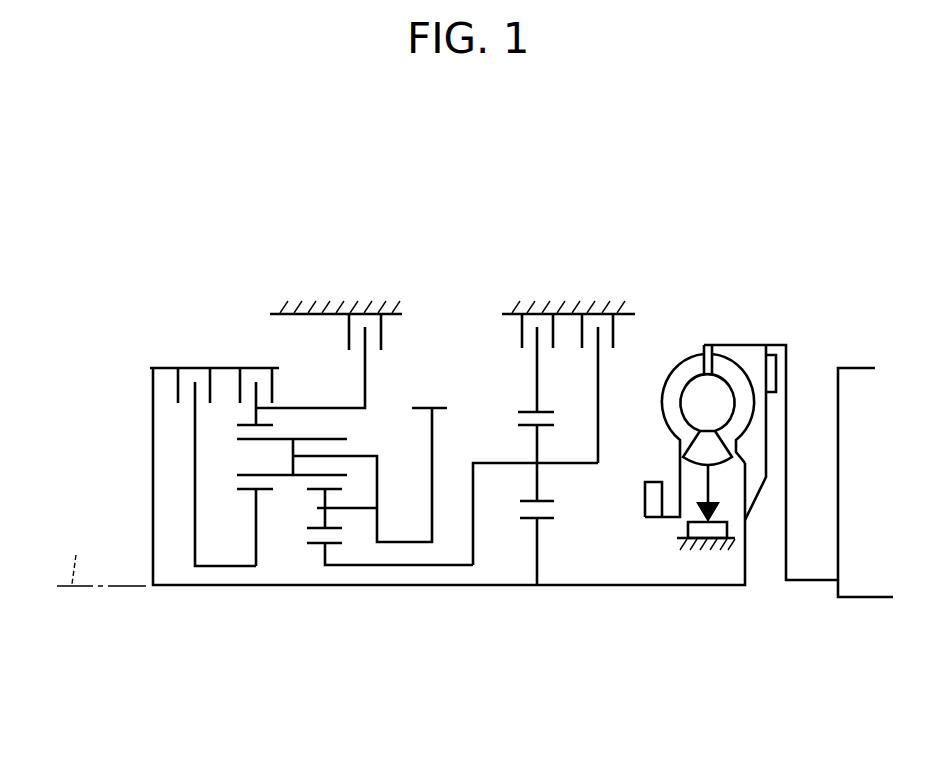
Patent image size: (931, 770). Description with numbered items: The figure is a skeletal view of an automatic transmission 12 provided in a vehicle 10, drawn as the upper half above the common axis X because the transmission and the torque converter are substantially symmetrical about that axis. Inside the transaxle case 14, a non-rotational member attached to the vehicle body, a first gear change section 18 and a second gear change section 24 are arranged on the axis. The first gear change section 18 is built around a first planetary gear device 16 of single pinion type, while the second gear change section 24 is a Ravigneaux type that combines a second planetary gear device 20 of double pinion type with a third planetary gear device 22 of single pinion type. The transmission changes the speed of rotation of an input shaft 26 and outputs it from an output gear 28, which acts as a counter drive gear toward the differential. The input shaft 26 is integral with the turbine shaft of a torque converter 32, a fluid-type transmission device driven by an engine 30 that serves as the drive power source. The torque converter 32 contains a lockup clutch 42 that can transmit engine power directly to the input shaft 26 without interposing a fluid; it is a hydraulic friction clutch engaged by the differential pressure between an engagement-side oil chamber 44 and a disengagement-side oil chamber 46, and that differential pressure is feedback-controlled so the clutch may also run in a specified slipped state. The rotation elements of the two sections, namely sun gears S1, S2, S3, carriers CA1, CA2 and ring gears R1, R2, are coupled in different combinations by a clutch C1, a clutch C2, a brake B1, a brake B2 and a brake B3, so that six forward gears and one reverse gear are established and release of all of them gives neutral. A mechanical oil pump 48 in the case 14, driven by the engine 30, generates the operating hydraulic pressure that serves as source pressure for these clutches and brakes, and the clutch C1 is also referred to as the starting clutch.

The vehicle 10 is at (786, 184).
The automatic transmission 12 is at (584, 238).
The transaxle case 14 is at (333, 313).
The first planetary gear device 16 is at (539, 607).
The first gear change section 18 is at (562, 687).
The second planetary gear device 20 is at (329, 607).
The third planetary gear device 22 is at (258, 607).
The second gear change section 24 is at (225, 689).
The input shaft 26 is at (727, 588).
The output gear 28 is at (440, 408).
The engine 30 is at (866, 585).
The torque converter 32 is at (735, 307).
The lockup clutch 42 is at (775, 380).
The engagement-side oil chamber 44 is at (747, 362).
The disengagement-side oil chamber 46 is at (773, 445).
The mechanical oil pump 48 is at (653, 482).
The clutch C1 is at (214, 451).
The clutch C2 is at (250, 381).
The brake B1 is at (618, 388).
The brake B2 is at (339, 361).
The brake B3 is at (519, 363).
The ring gear R1 is at (528, 412).
The ring gear R2 is at (250, 417).
The sun gear S1 is at (545, 520).
The sun gear S2 is at (317, 545).
The sun gear S3 is at (247, 492).
The carrier CA1 is at (570, 467).
The carrier CA2 is at (362, 456).